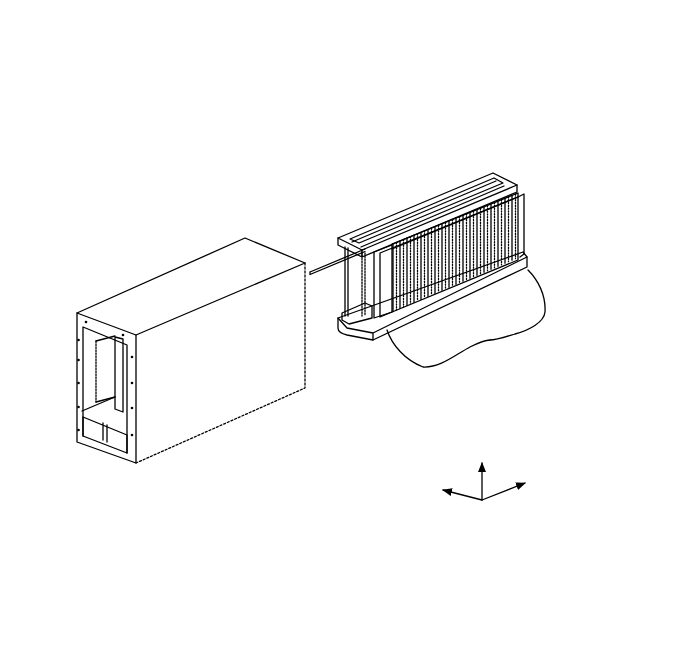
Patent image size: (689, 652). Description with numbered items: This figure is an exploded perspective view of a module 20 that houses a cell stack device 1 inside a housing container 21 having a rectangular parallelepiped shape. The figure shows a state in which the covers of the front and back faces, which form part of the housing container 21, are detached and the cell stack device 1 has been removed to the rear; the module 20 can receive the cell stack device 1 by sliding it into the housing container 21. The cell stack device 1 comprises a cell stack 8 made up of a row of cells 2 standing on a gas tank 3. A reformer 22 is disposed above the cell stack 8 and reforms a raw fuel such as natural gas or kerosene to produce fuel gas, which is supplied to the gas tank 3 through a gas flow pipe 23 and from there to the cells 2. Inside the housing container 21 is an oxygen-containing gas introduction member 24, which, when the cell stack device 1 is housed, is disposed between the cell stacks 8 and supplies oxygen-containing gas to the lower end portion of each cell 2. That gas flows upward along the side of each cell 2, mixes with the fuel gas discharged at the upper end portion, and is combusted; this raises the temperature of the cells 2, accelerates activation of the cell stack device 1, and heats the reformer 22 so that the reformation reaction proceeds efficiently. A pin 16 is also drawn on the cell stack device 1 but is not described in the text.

The cell stack device 1 is at (453, 173).
The cell 2 is at (523, 202).
The gas tank 3 is at (363, 340).
The cell stack 8 is at (490, 340).
The positioning pin 16 is at (318, 274).
The module 20 is at (152, 90).
The housing container 21 is at (212, 262).
The reformer 22 is at (385, 222).
The gas flow pipe 23 is at (343, 253).
The oxygen-containing gas introduction member 24 is at (123, 353).